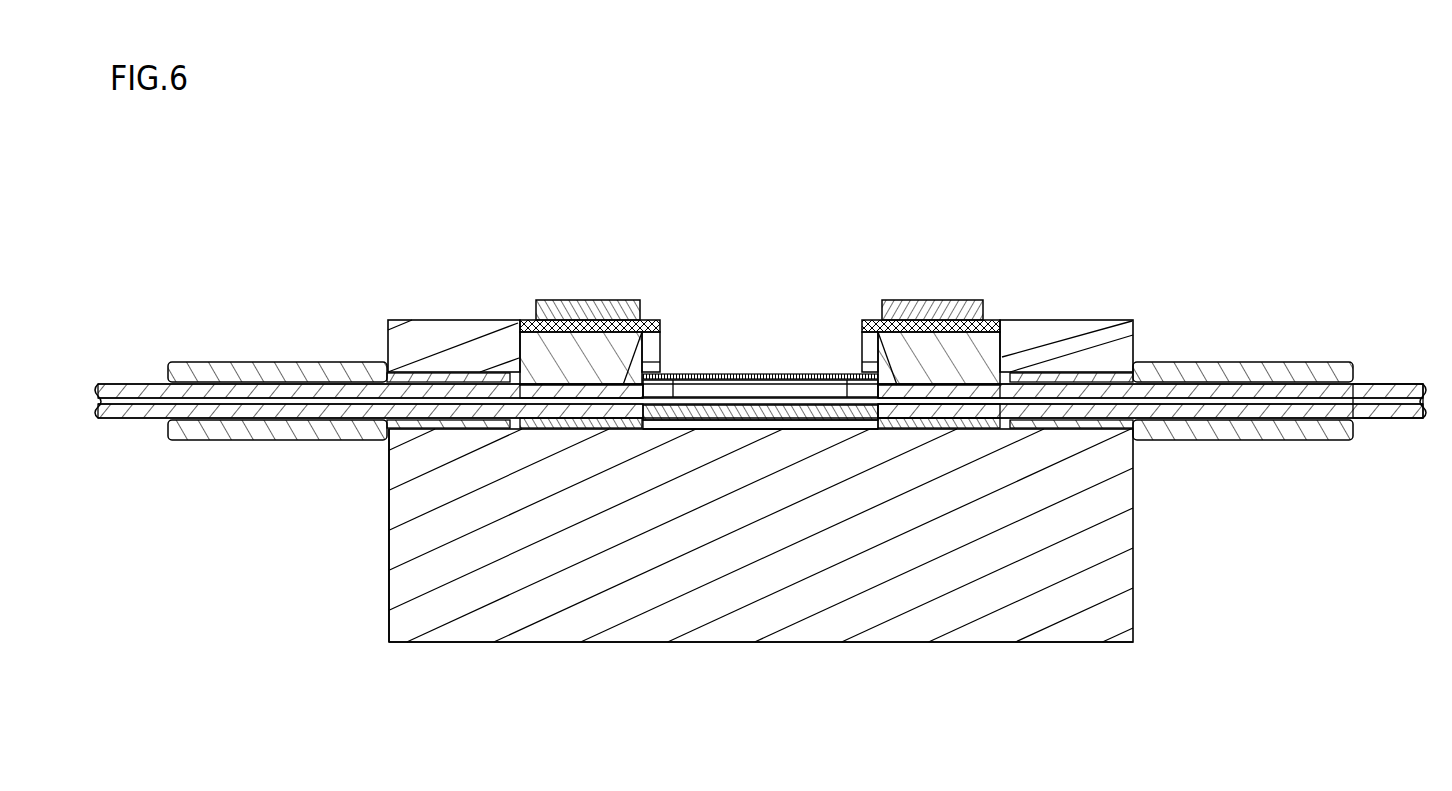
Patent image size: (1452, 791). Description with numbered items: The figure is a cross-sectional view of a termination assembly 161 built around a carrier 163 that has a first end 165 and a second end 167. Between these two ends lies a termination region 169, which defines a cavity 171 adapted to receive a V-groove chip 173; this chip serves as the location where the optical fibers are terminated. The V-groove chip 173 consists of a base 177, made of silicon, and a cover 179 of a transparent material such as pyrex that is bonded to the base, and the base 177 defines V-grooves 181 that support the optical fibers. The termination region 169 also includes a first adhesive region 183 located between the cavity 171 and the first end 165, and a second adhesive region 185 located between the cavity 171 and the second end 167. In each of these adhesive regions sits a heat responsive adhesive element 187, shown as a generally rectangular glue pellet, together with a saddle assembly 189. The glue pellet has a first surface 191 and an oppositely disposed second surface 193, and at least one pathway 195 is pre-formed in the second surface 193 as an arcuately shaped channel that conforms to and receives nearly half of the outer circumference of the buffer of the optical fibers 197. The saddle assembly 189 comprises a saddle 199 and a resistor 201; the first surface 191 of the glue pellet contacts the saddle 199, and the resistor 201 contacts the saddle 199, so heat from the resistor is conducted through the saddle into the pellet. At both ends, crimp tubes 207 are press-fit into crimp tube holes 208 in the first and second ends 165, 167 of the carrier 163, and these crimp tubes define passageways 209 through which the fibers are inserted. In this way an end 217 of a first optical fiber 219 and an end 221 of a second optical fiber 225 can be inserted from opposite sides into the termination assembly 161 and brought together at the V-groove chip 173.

The termination assembly 161 is at (760, 431).
The carrier 163 is at (655, 646).
The first end 165 is at (1134, 578).
The second end 167 is at (388, 594).
The termination region 169 is at (662, 418).
The cavity 171 is at (800, 430).
The V-groove chip 173 is at (707, 364).
The base 177 is at (674, 435).
The cover 179 is at (680, 375).
The V-grooves 181 is at (735, 388).
The first adhesive region 183 is at (963, 436).
The second adhesive region 185 is at (557, 440).
The heat responsive adhesive element 187 is at (527, 372).
The saddle assembly 189 is at (860, 317).
The first surface 191 is at (986, 343).
The second surface 193 is at (985, 408).
The pathway 195 is at (567, 386).
The optical fibers 197 is at (1398, 383).
The saddle 199 is at (943, 317).
The resistor 201 is at (898, 300).
The crimp tubes 207 is at (190, 364).
The crimp tube holes 208 is at (1006, 372).
The passageways 209 is at (272, 380).
The end of first optical fiber 217 is at (812, 397).
The first optical fiber 219 is at (1230, 400).
The end of second optical fiber 221 is at (742, 396).
The second optical fiber 225 is at (303, 400).